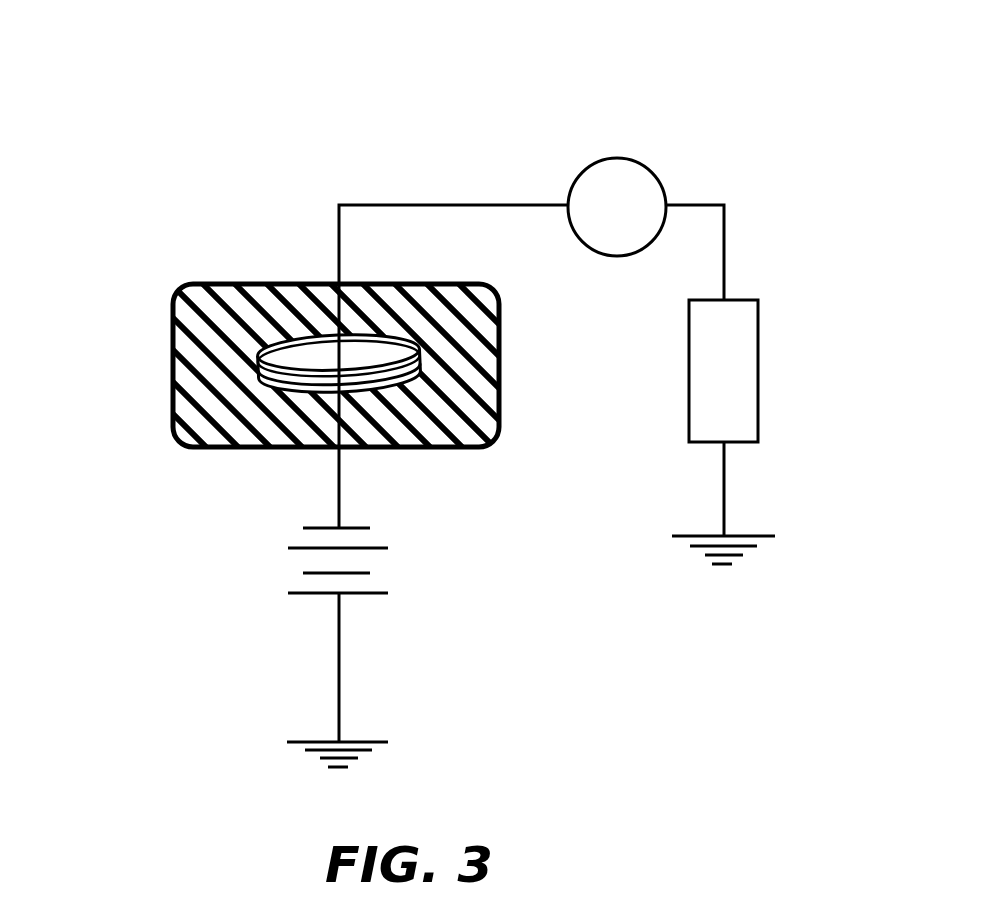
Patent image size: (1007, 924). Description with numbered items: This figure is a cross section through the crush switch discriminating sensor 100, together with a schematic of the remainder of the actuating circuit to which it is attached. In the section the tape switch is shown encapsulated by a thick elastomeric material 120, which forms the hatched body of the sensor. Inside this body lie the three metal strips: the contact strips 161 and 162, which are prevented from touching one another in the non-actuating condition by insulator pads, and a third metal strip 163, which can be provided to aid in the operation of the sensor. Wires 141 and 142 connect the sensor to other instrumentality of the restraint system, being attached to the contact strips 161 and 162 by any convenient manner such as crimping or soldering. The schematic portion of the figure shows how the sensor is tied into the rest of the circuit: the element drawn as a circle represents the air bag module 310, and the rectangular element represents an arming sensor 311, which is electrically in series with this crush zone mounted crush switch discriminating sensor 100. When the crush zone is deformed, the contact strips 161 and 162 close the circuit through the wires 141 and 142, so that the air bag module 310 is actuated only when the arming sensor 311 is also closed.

The sensor 100 is at (172, 353).
The elastomeric material 120 is at (421, 323).
The wire 141 is at (340, 393).
The wire 142 is at (352, 372).
The contact strip 161 is at (262, 388).
The contact strip 162 is at (262, 366).
The third metal strip 163 is at (287, 342).
The air bag module 310 is at (618, 203).
The arming sensor 311 is at (725, 387).